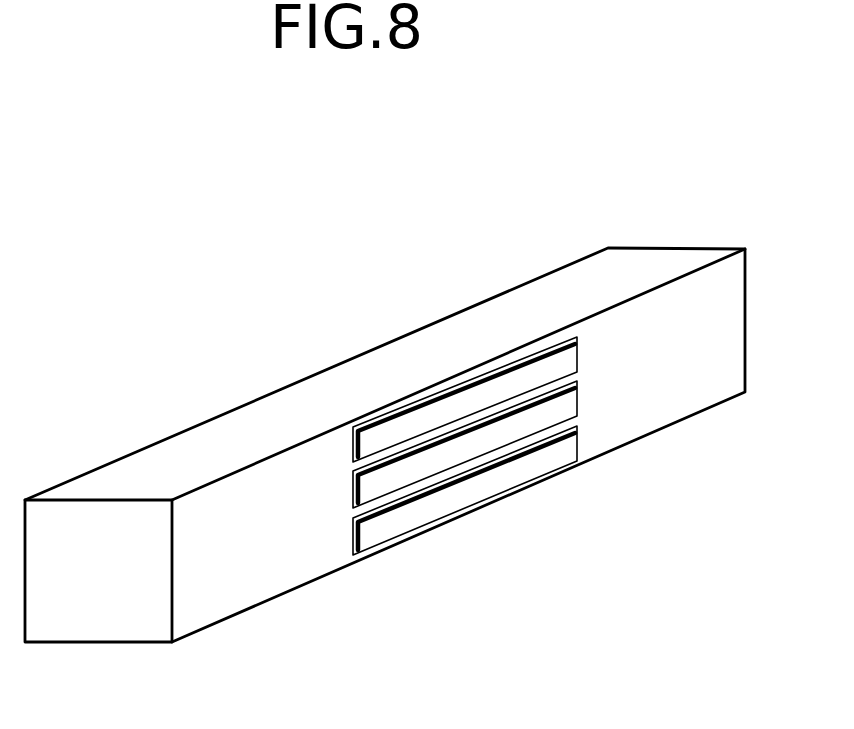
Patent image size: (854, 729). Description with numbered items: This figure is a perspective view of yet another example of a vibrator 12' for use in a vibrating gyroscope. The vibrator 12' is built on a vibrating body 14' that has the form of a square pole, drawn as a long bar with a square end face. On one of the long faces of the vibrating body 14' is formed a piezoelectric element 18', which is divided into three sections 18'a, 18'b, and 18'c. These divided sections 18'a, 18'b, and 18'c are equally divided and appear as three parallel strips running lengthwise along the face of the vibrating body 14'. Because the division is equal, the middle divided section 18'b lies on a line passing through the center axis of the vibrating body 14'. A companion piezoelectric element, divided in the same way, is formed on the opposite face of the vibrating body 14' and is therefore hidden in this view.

The vibrator 12' is at (385, 342).
The vibrating body 14' is at (385, 401).
The piezoelectric element 18' is at (412, 356).
The divided section 18'a is at (421, 341).
The divided section 18'b is at (455, 364).
The divided section 18'c is at (465, 388).